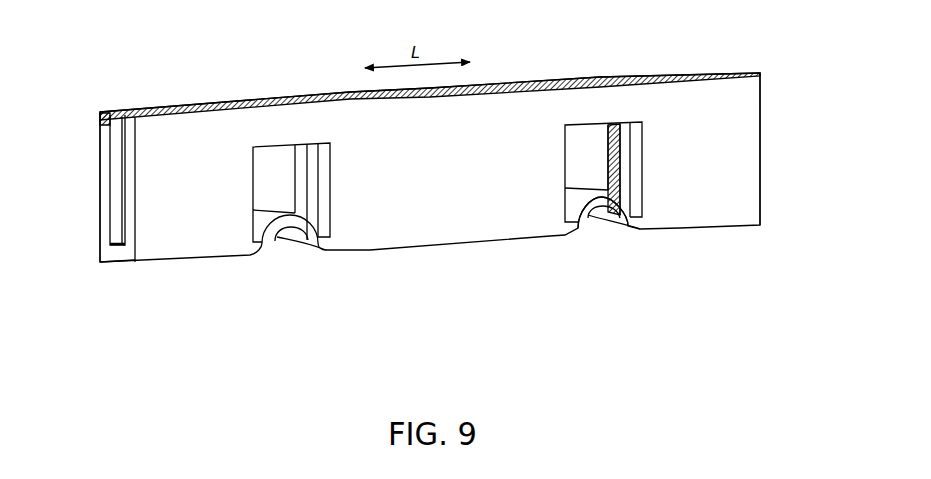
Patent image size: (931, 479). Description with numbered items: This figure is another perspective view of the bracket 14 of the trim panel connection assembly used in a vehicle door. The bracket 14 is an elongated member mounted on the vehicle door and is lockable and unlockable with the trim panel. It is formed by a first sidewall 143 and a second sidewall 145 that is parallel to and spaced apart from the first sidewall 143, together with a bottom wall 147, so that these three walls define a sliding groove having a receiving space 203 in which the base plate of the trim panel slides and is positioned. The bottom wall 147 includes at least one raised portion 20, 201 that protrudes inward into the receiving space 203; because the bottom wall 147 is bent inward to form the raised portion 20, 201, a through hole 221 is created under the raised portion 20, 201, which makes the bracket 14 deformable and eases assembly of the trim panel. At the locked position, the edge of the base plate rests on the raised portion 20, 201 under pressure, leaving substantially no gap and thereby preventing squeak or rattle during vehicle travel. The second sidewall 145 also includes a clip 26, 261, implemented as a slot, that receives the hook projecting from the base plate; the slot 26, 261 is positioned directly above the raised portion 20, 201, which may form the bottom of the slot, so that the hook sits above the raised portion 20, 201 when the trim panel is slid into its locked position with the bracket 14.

The bracket 14 is at (726, 122).
The first sidewall 143 is at (100, 138).
The second sidewall 145 is at (130, 142).
The bottom wall 147 is at (117, 257).
The receiving space 203 is at (119, 127).
The through hole 221 is at (281, 250).
The clip 26 is at (643, 172).
The clip 261 is at (619, 170).
The raised portion 20 is at (586, 210).
The raised portion 201 is at (614, 217).